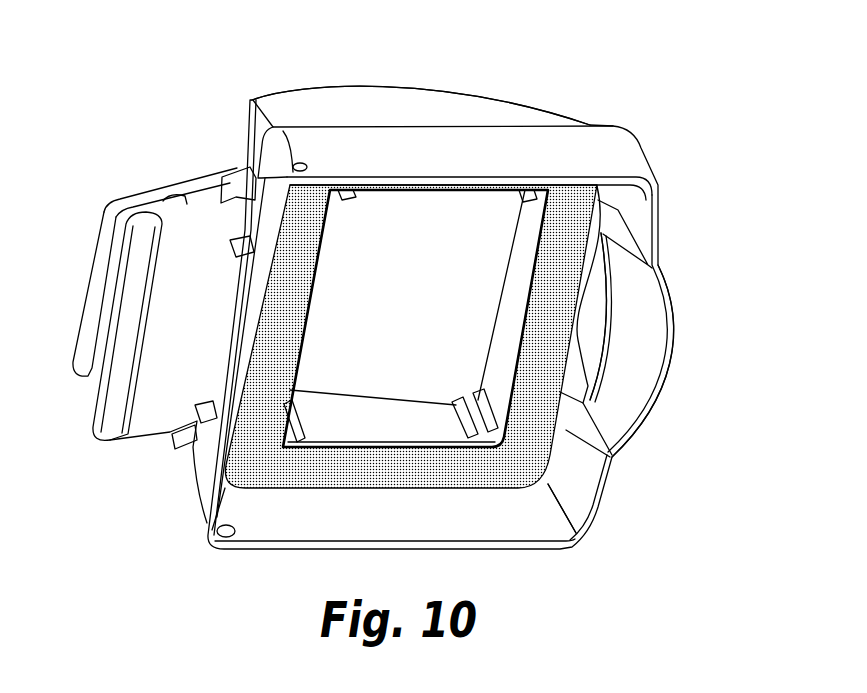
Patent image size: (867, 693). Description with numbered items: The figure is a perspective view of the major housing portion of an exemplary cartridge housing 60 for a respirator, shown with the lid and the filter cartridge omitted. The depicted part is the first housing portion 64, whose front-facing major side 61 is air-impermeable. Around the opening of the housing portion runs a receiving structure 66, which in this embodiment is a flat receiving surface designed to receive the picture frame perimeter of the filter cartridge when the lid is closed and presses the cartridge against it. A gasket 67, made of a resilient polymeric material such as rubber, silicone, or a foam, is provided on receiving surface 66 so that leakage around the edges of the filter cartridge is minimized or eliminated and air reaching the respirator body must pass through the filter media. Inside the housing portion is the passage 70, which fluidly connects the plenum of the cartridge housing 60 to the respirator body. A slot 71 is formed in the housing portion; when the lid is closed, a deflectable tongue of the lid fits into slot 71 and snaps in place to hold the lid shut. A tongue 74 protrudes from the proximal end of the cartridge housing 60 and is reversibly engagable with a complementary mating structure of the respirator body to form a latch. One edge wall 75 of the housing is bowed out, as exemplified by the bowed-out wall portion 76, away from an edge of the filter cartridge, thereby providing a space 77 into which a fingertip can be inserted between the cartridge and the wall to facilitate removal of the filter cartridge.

The cartridge housing 60 is at (380, 309).
The front-facing major side 61 is at (463, 310).
The first housing portion 64 is at (309, 92).
The receiving structure 66 is at (407, 463).
The gasket 67 is at (337, 477).
The passage 70 is at (105, 406).
The slot 71 is at (593, 310).
The tongue 74 is at (133, 345).
The edge wall 75 is at (590, 518).
The bowed-out wall portion 76 is at (643, 428).
The space 77 is at (628, 365).